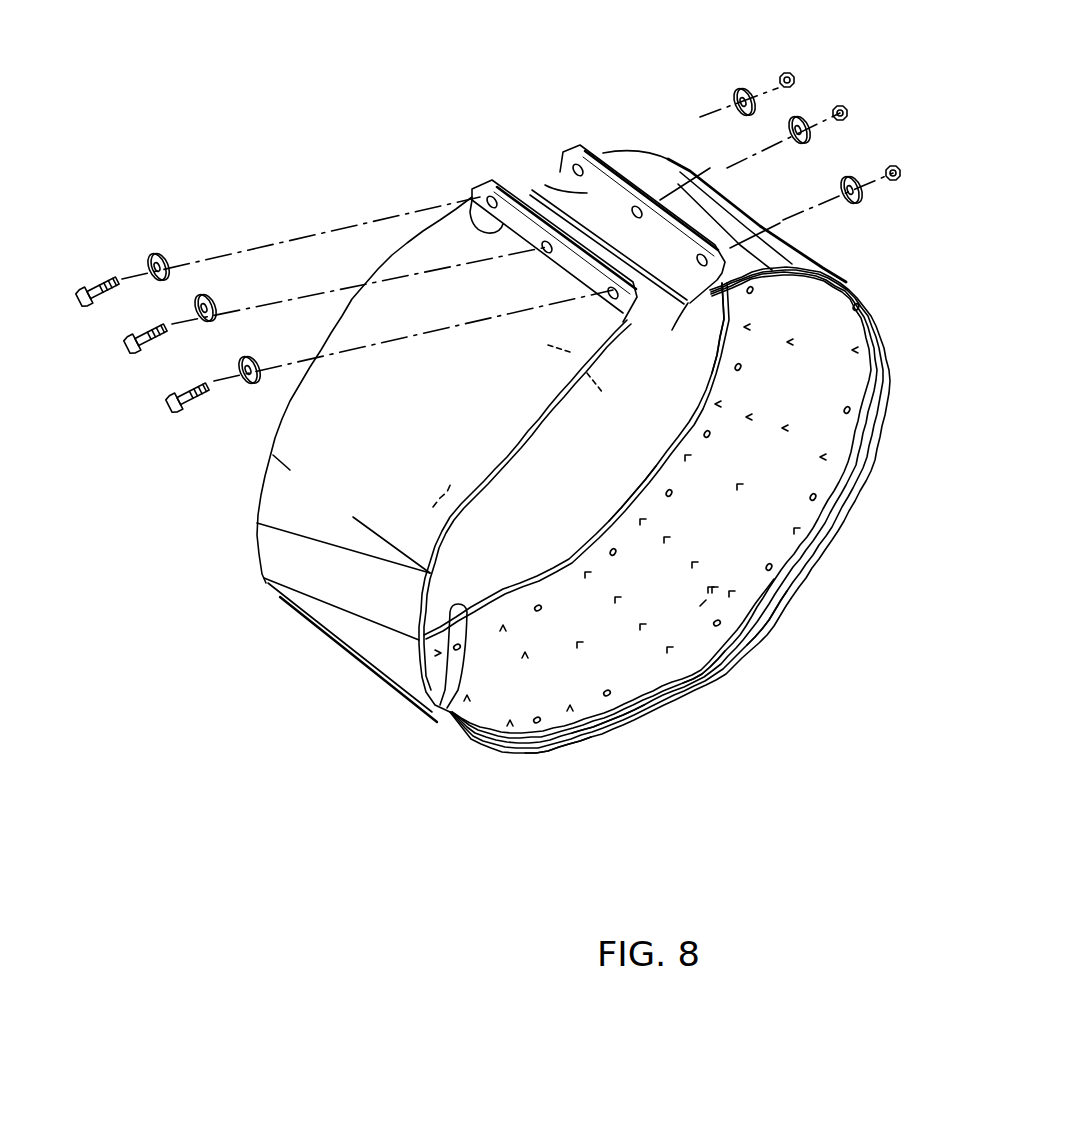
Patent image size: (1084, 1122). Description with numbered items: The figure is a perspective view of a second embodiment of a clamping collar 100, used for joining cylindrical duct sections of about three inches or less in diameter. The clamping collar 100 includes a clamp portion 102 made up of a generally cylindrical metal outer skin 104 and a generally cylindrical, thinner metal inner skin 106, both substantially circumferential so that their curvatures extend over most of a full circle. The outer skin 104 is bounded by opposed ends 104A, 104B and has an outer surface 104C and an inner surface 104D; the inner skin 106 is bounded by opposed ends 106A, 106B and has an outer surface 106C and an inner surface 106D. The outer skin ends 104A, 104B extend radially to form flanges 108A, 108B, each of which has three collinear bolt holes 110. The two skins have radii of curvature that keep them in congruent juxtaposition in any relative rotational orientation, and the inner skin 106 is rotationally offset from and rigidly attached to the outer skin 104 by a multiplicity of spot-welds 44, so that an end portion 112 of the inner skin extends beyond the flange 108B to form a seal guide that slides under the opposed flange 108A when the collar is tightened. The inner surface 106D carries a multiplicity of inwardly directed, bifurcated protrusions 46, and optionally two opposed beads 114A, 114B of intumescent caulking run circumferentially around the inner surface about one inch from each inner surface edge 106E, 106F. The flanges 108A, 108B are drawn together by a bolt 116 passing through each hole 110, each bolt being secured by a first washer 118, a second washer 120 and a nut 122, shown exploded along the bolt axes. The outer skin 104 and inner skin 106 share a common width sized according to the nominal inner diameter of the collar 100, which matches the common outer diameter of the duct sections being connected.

The clamping collar 100 is at (430, 98).
The clamp portion 102 is at (874, 538).
The outer skin 104 is at (267, 445).
The outer skin end 104A is at (472, 200).
The outer skin end 104B is at (545, 185).
The outer surface of outer skin 104C is at (445, 435).
The inner surface of outer skin 104D is at (466, 515).
The inner skin 106 is at (566, 543).
The inner skin end 106A is at (595, 385).
The inner skin end 106B is at (672, 330).
The outer surface of inner skin 106C is at (752, 643).
The inner surface of inner skin 106D is at (627, 668).
The inner surface edge 106E is at (448, 695).
The inner surface edge 106F is at (604, 740).
The flange 108A is at (480, 175).
The flange 108B is at (580, 139).
The bolt hole 110 is at (547, 256).
The end portion 112 is at (716, 305).
The bead of intumescent caulking 114A is at (633, 498).
The bead of intumescent caulking 114B is at (697, 668).
The bolt 116 is at (100, 284).
The first washer 118 is at (156, 254).
The second washer 120 is at (740, 90).
The nut 122 is at (788, 72).
The spot-weld 44 is at (672, 495).
The protrusion 46 is at (735, 487).